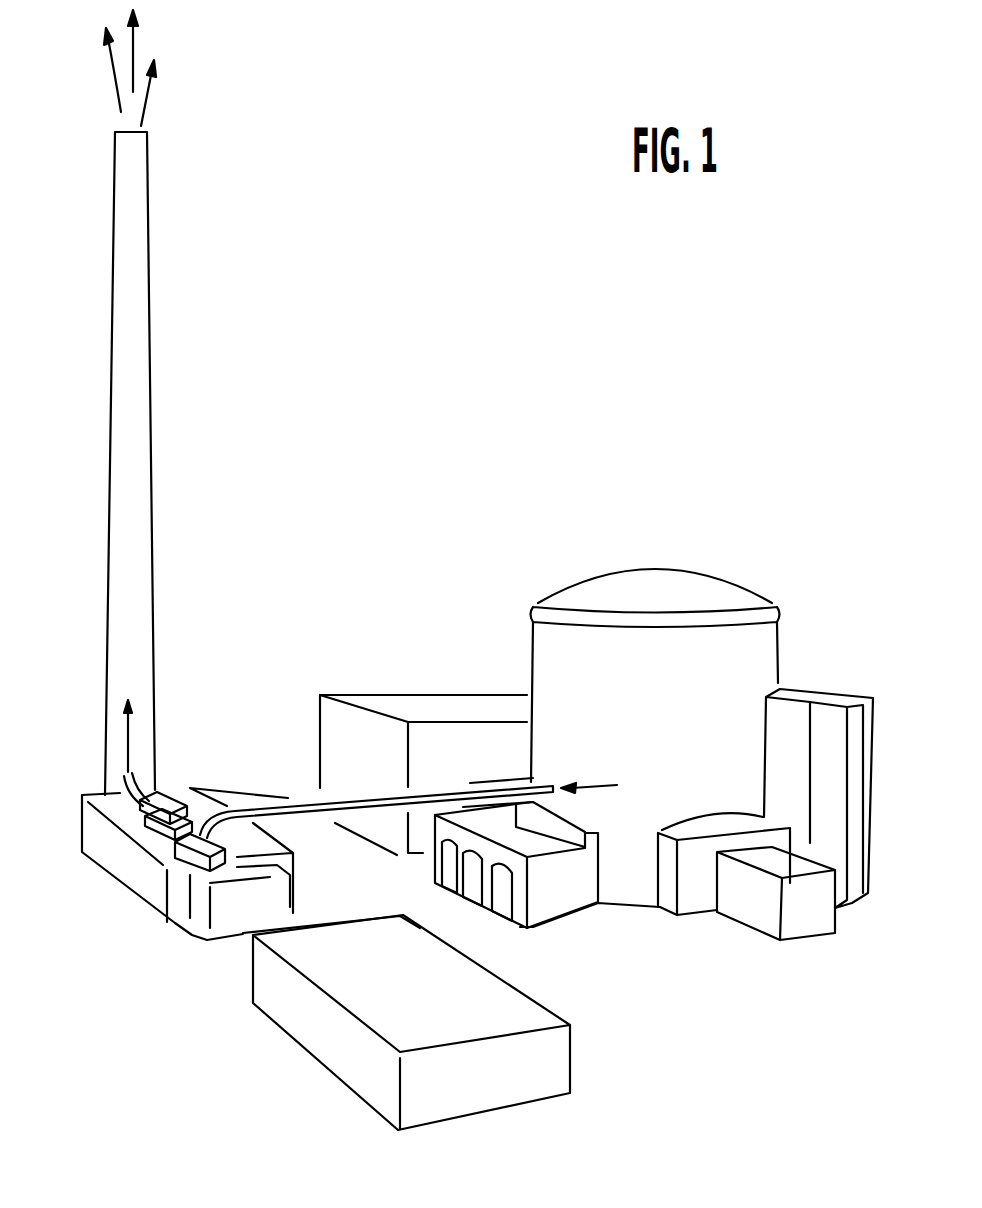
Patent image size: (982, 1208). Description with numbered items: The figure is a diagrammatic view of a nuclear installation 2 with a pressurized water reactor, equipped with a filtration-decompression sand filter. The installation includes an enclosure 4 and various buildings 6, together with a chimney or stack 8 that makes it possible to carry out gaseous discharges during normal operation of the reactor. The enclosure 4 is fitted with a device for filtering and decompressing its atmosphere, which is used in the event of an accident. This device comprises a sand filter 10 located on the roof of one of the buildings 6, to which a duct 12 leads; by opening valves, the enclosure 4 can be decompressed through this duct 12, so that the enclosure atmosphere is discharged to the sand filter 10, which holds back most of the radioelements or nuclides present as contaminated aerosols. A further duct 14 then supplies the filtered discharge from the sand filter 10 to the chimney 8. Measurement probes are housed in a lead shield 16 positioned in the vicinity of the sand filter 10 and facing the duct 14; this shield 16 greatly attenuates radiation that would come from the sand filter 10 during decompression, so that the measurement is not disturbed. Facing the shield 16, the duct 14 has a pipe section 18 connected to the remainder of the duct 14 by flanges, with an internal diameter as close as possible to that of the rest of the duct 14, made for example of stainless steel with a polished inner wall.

The nuclear installation 2 is at (428, 558).
The enclosure 4 is at (695, 583).
The buildings 6 is at (267, 973).
The chimney 8 is at (130, 239).
The sand filter 10 is at (208, 857).
The duct 12 is at (367, 812).
The duct 14 is at (120, 782).
The shield 16 is at (183, 790).
The pipe section 18 is at (143, 814).